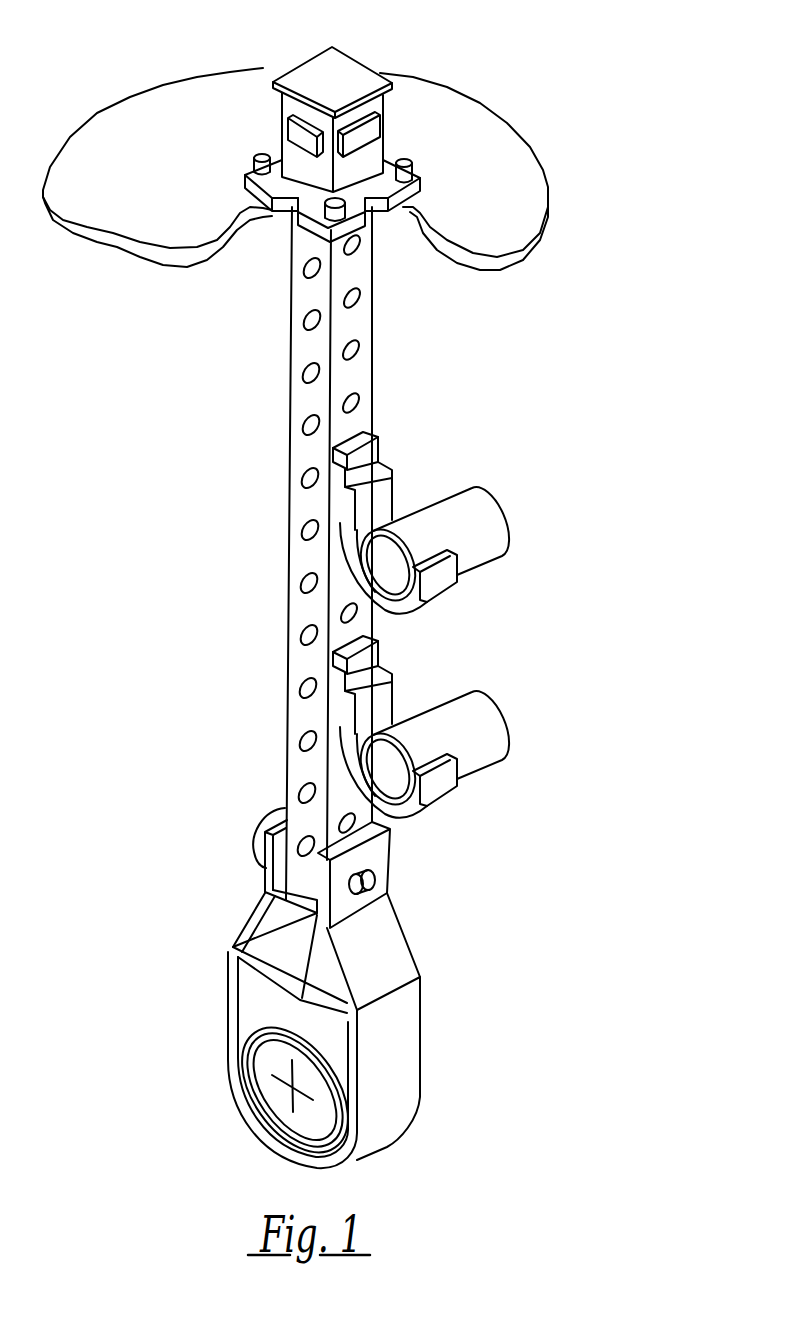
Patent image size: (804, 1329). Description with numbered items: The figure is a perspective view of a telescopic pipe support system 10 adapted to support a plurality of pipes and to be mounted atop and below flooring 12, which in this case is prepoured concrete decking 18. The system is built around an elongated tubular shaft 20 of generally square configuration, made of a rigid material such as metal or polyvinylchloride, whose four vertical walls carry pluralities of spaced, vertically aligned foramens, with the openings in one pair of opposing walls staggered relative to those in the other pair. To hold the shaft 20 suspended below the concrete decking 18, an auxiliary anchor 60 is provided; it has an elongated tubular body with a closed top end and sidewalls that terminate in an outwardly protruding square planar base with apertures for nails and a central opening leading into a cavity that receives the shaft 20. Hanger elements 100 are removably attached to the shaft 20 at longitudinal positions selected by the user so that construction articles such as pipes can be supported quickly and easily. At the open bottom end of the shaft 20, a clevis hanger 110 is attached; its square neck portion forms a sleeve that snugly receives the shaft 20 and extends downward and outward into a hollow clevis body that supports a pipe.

The telescopic pipe support system 10 is at (590, 344).
The flooring 12 is at (115, 95).
The concrete 18 is at (521, 158).
The elongated tubular shaft 20 is at (305, 557).
The auxiliary anchor 60 is at (354, 56).
The hanger elements 100 is at (450, 572).
The clevis hanger 110 is at (233, 935).